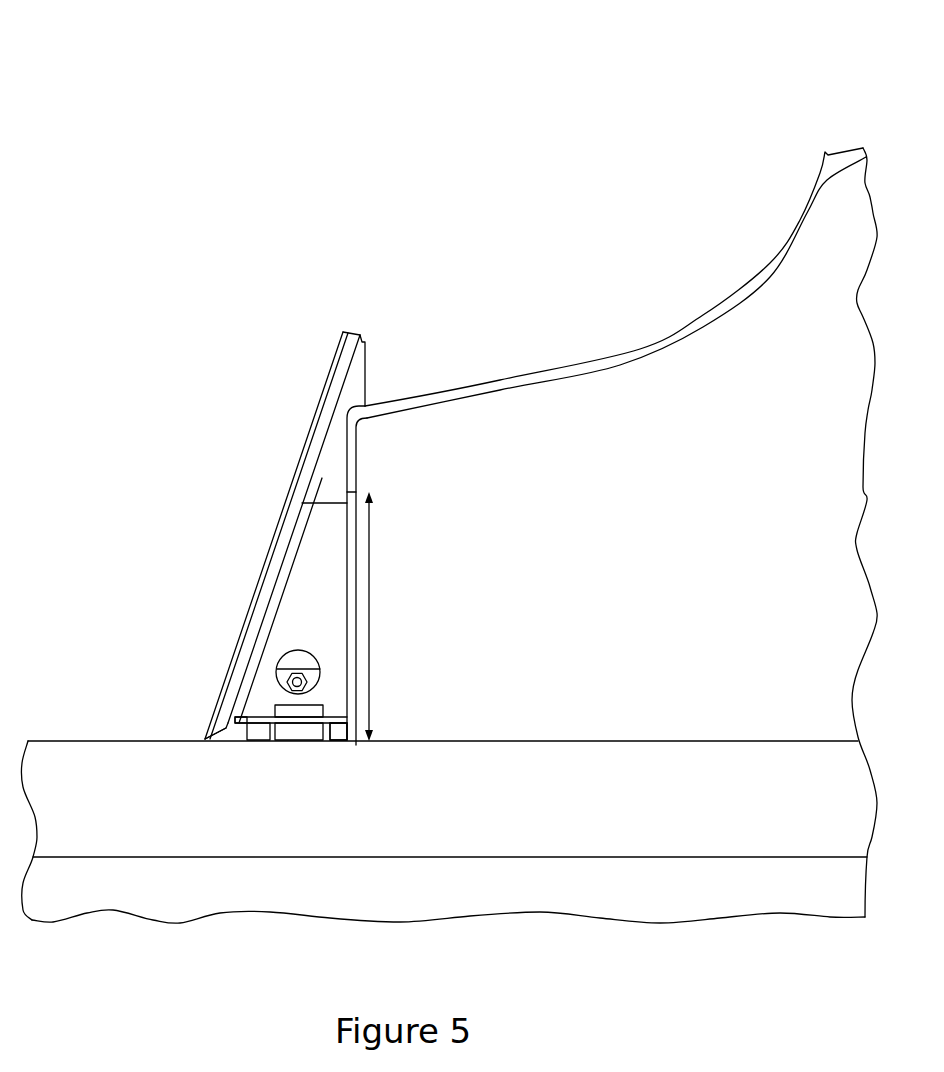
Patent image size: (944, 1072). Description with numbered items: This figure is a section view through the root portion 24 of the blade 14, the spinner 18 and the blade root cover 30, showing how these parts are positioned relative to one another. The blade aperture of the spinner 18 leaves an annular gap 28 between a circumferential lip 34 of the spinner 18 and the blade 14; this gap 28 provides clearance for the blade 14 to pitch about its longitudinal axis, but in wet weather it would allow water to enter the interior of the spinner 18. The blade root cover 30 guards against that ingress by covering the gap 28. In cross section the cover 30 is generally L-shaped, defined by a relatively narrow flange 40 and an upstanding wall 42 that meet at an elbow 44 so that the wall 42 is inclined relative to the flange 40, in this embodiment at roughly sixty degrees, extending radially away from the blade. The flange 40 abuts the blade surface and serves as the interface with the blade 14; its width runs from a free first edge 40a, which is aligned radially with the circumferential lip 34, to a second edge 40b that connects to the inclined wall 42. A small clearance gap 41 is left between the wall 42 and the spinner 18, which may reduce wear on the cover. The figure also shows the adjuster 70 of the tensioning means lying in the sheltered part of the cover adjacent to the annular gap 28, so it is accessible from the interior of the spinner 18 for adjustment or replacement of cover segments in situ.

The blade 14 is at (648, 901).
The spinner 18 is at (800, 222).
The blade root portion 24 is at (770, 812).
The circumferential gap 28 is at (370, 597).
The blade root cover 30 is at (270, 457).
The circumferential lip 34 is at (352, 472).
The flange 40 is at (243, 712).
The first edge 40a is at (347, 745).
The second edge 40b is at (223, 712).
The clearance gap 41 is at (353, 406).
The wall 42 is at (255, 600).
The elbow 44 is at (228, 698).
The adjuster 70 is at (325, 673).